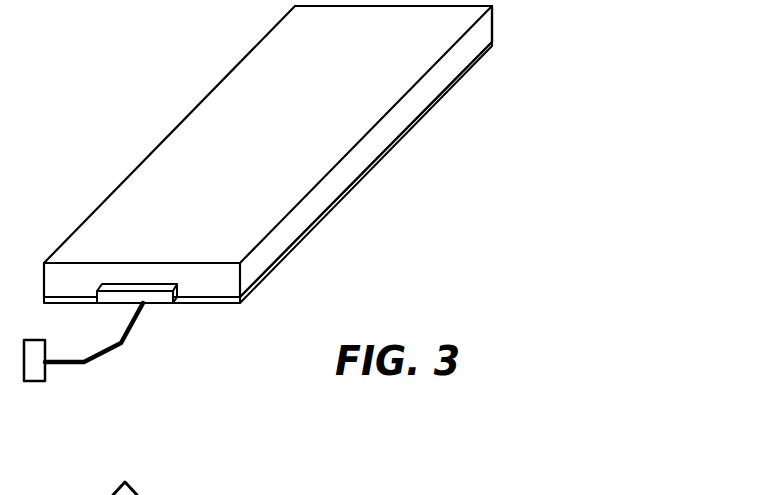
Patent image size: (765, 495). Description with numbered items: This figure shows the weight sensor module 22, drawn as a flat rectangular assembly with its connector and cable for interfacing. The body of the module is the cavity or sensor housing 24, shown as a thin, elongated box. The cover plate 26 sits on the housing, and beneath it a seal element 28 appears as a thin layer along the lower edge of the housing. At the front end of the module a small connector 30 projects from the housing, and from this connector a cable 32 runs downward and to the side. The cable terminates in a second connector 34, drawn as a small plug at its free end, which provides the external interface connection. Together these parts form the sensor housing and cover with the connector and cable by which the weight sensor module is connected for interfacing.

The weight sensor module 22 is at (147, 166).
The sensor housing 24 is at (494, 28).
The cover plate 26 is at (420, 122).
The seal element 28 is at (365, 172).
The connector 30 is at (152, 303).
The cable 32 is at (113, 350).
The connector 34 is at (45, 373).